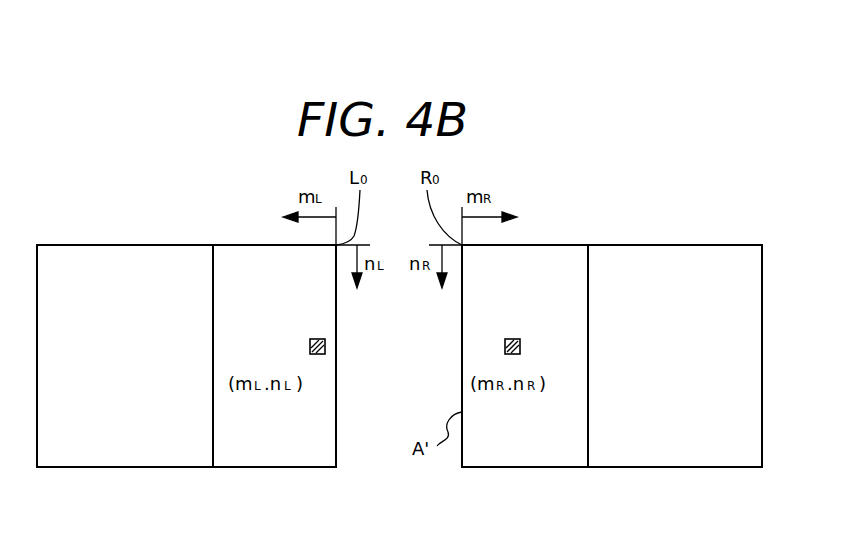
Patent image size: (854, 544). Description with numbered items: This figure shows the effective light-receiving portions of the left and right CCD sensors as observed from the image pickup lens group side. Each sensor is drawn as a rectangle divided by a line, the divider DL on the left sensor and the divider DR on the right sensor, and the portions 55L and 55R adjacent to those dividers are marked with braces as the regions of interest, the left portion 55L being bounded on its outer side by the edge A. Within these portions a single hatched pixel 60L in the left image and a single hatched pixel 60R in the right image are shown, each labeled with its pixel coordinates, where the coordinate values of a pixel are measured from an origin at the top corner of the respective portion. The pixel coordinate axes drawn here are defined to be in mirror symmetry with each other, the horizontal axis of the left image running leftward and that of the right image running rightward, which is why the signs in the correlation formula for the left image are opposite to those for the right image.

The left image pixel 60L is at (311, 339).
The right image pixel 60R is at (514, 339).
The left overlap region 55L is at (336, 470).
The right overlap region 55R is at (588, 470).
The left image boundary A is at (336, 360).
The left image divider DL is at (213, 428).
The right image divider DR is at (588, 430).